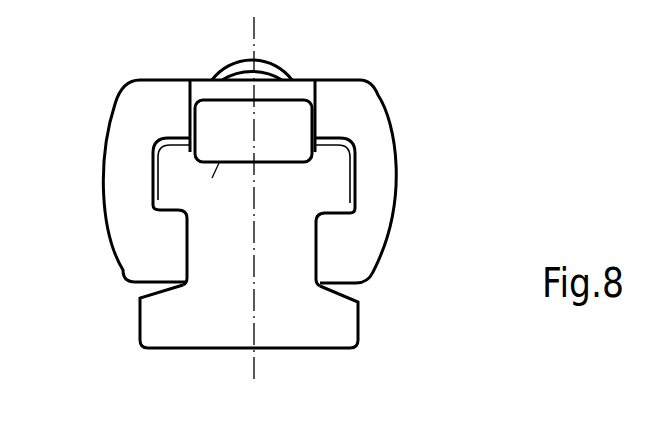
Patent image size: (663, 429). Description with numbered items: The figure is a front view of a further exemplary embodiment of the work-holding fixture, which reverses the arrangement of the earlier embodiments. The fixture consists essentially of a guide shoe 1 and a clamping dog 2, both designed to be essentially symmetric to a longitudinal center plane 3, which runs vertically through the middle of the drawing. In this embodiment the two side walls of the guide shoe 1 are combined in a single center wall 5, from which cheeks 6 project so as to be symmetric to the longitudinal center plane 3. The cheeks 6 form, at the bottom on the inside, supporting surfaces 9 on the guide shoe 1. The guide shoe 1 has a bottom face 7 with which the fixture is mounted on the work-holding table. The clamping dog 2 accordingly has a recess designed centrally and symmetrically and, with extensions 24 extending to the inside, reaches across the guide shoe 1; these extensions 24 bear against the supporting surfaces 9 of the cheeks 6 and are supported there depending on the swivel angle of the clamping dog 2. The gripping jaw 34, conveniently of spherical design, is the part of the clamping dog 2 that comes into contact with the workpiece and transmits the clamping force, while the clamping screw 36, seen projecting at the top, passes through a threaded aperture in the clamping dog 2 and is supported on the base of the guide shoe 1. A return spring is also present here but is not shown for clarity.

The guide shoe 1 is at (293, 353).
The clamping dog 2 is at (350, 80).
The longitudinal center plane 3 is at (253, 33).
The center wall 5 is at (268, 255).
The cheeks 6 is at (167, 178).
The bottom face 7 is at (162, 347).
The supporting surfaces 9 is at (165, 216).
The extensions 24 is at (180, 238).
The gripping jaw 34 is at (212, 178).
The clamping screw 36 is at (279, 61).